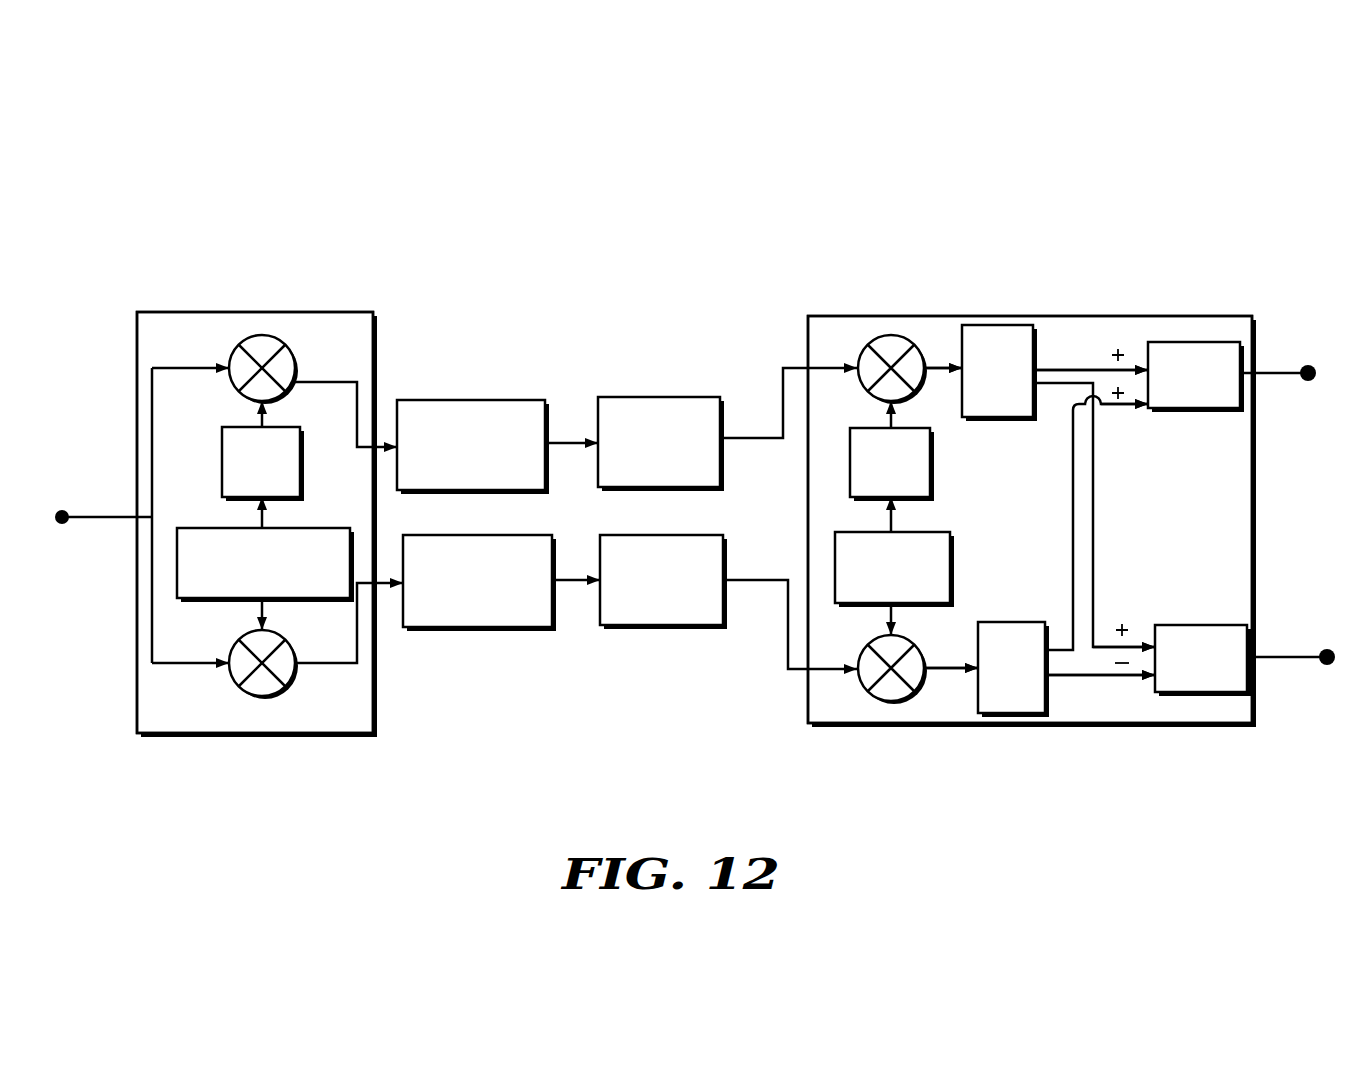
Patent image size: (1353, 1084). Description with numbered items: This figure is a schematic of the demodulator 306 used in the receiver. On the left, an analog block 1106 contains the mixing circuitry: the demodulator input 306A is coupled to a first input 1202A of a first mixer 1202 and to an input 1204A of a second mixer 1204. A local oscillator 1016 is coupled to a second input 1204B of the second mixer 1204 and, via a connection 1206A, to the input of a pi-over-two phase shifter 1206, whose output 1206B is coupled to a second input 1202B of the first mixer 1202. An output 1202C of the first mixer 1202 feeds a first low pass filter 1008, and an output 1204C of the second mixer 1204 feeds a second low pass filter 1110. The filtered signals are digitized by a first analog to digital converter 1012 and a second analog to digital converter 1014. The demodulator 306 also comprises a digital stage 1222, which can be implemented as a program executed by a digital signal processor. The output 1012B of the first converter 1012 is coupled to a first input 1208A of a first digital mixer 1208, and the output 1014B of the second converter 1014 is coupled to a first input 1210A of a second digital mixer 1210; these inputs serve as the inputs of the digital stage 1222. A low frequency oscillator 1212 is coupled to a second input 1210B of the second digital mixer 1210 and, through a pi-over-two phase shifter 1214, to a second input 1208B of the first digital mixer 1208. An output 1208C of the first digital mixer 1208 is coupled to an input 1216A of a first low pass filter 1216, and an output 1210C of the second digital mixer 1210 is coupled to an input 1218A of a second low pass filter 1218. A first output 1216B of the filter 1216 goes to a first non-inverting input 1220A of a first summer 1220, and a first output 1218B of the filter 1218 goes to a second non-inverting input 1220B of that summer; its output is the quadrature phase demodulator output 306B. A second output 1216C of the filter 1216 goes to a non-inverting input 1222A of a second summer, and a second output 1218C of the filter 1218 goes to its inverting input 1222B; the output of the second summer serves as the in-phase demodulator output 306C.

The demodulator 306 is at (628, 818).
The demodulator input 306A is at (67, 510).
The quadrature phase demodulator output 306B is at (1317, 363).
The in-phase demodulator output 306C is at (1318, 654).
The analog quadrature demodulator block 1106 is at (278, 312).
The first mixer 1202 is at (248, 335).
The first input of first mixer 1202A is at (221, 367).
The second input of first mixer 1202B is at (277, 408).
The output of first mixer 1202C is at (303, 380).
The second mixer 1204 is at (262, 697).
The input of second mixer 1204A is at (228, 664).
The second input of second mixer 1204B is at (273, 632).
The output of second mixer 1204C is at (305, 668).
The π/2 phase shifter 1206 is at (222, 462).
The phase shifter input 1206A is at (222, 505).
The output of π/2 phase shifter 1206B is at (152, 368).
The local oscillator 1016 is at (177, 558).
The first low pass filter 1008 is at (468, 400).
The second low pass filter 1110 is at (477, 630).
The first analog to digital converter 1012 is at (657, 395).
The output of first analog to digital converter 1012B is at (730, 437).
The second analog to digital converter 1014 is at (610, 627).
The output of second analog to digital converter 1014B is at (733, 583).
The digital stage 1222 is at (760, 322).
The first digital mixer 1208 is at (887, 334).
The first input of first digital mixer 1208A is at (850, 366).
The second input of first digital mixer 1208B is at (882, 402).
The output of first digital mixer 1208C is at (938, 368).
The second digital mixer 1210 is at (890, 702).
The first input of second digital mixer 1210A is at (857, 670).
The second input of second digital mixer 1210B is at (887, 636).
The output of second digital mixer 1210C is at (930, 667).
The low frequency oscillator 1212 is at (950, 537).
The π/2 phase shifter 1214 is at (937, 455).
The first low pass filter 1216 is at (988, 325).
The input of first low pass filter 1216A is at (957, 355).
The first output of first low pass filter 1216B is at (1040, 367).
The second output of first low pass filter 1216C is at (1038, 383).
The second low pass filter 1218 is at (993, 715).
The input of second low pass filter 1218A is at (973, 668).
The first output of second low pass filter 1218B is at (1055, 648).
The second output of second low pass filter 1218C is at (1055, 680).
The first summer 1220 is at (1200, 338).
The first non-inverting input of first summer 1220A is at (1147, 363).
The second non-inverting input of first summer 1220B is at (1145, 412).
The non-inverting input of second summer 1222A is at (1150, 638).
The inverting input of second summer 1222B is at (1148, 677).